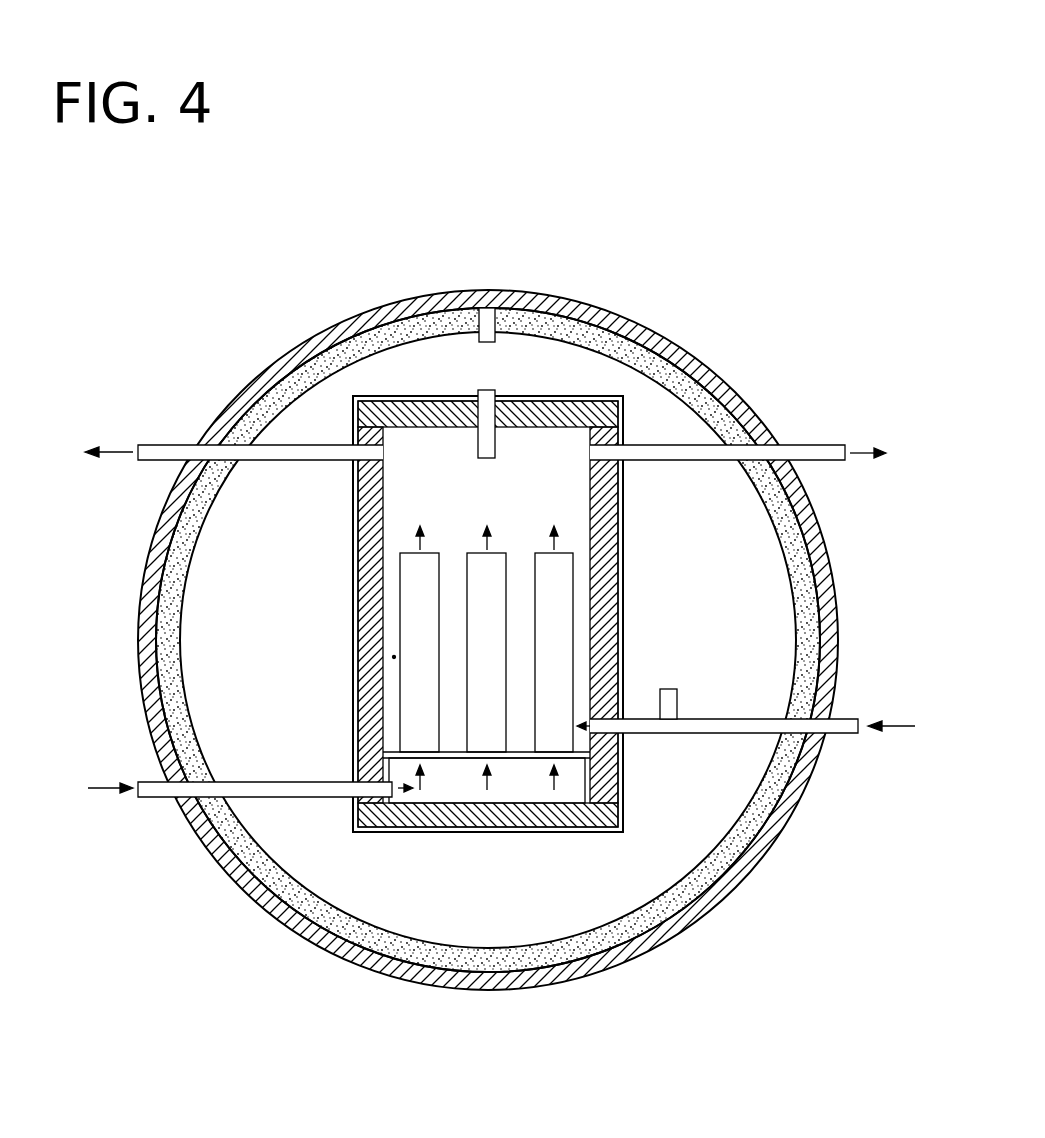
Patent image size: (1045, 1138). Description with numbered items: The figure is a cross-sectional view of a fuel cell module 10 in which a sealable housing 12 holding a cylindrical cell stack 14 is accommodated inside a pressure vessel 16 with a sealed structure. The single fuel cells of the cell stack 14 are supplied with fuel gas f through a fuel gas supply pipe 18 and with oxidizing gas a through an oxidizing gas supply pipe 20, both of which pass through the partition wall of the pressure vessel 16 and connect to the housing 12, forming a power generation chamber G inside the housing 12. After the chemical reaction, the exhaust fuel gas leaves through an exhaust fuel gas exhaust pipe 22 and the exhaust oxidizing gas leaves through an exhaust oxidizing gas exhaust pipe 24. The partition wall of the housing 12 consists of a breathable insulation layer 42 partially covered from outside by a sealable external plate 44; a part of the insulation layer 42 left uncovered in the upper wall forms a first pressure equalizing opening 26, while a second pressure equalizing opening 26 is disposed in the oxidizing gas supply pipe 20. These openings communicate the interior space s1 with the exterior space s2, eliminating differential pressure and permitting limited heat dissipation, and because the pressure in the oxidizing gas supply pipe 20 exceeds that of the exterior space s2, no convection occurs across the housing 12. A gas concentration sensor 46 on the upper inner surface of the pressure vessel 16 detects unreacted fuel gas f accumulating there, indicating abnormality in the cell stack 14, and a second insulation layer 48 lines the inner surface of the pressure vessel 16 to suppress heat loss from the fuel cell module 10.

The fuel cell module 10 is at (540, 191).
The housing 12 is at (443, 647).
The cell stack 14 is at (573, 603).
The pressure vessel 16 is at (684, 338).
The fuel gas supply pipe 18 is at (245, 780).
The oxidizing gas supply pipe 20 is at (737, 717).
The exhaust fuel gas exhaust pipe 22 is at (816, 444).
The exhaust oxidizing gas exhaust pipe 24 is at (277, 462).
The pressure equalizing opening 26 is at (492, 390).
The insulation layer 42 is at (606, 522).
The external plate 44 is at (622, 490).
The gas concentration sensor 46 is at (496, 324).
The insulation layer 48 is at (805, 600).
The interior space s1 is at (470, 501).
The exterior space s2 is at (744, 561).
The power generation chamber G is at (392, 657).
The fuel gas f is at (100, 783).
The oxidizing gas a is at (900, 722).